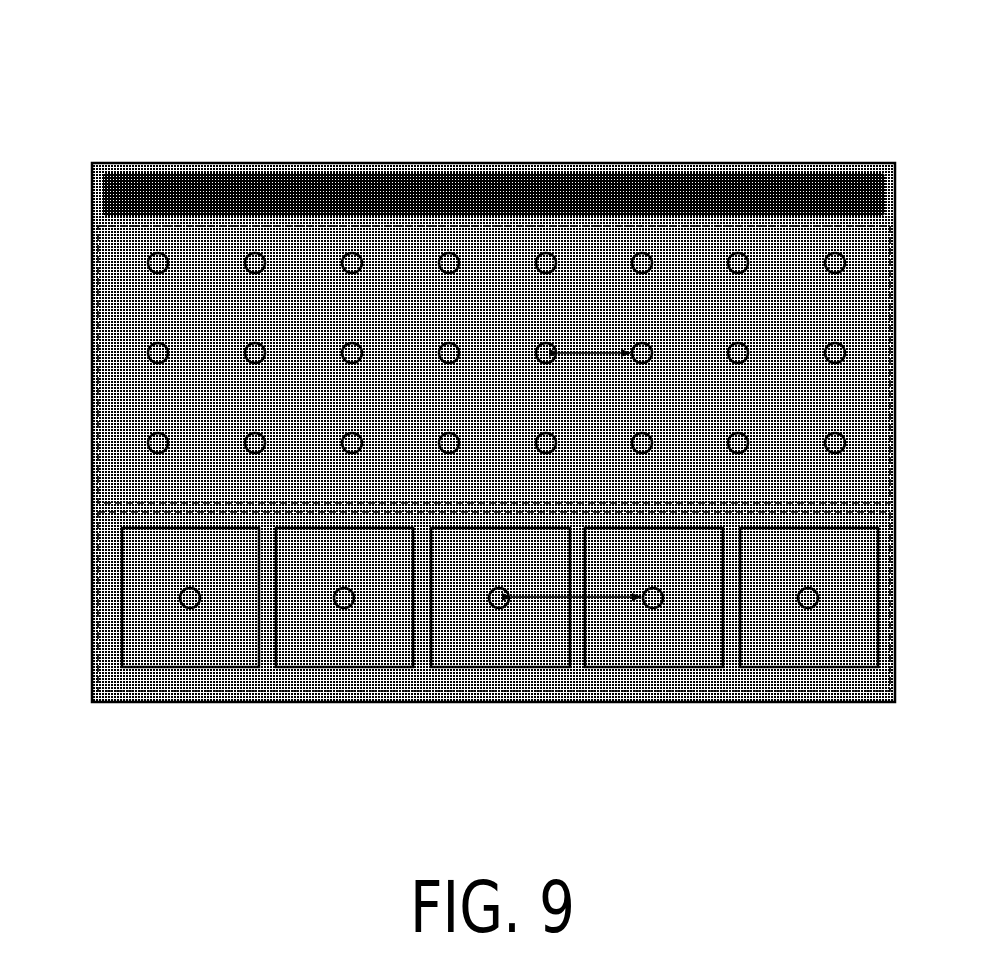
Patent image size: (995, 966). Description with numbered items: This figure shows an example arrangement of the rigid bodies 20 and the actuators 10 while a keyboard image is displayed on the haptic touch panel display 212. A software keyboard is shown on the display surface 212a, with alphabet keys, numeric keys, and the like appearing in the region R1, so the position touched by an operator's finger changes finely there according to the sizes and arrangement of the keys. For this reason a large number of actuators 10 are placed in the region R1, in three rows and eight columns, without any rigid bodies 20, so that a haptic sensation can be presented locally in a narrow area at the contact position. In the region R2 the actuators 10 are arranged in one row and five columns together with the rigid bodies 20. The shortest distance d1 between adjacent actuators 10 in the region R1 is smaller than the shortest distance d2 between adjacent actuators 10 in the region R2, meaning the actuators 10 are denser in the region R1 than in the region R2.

The haptic touch panel display 212 is at (858, 145).
The display surface 212a is at (684, 163).
The region R1 is at (848, 226).
The region R2 is at (833, 513).
The actuator 10 is at (148, 440).
The rigid body 20 is at (173, 667).
The shortest distance d1 is at (594, 342).
The shortest distance d2 is at (576, 586).